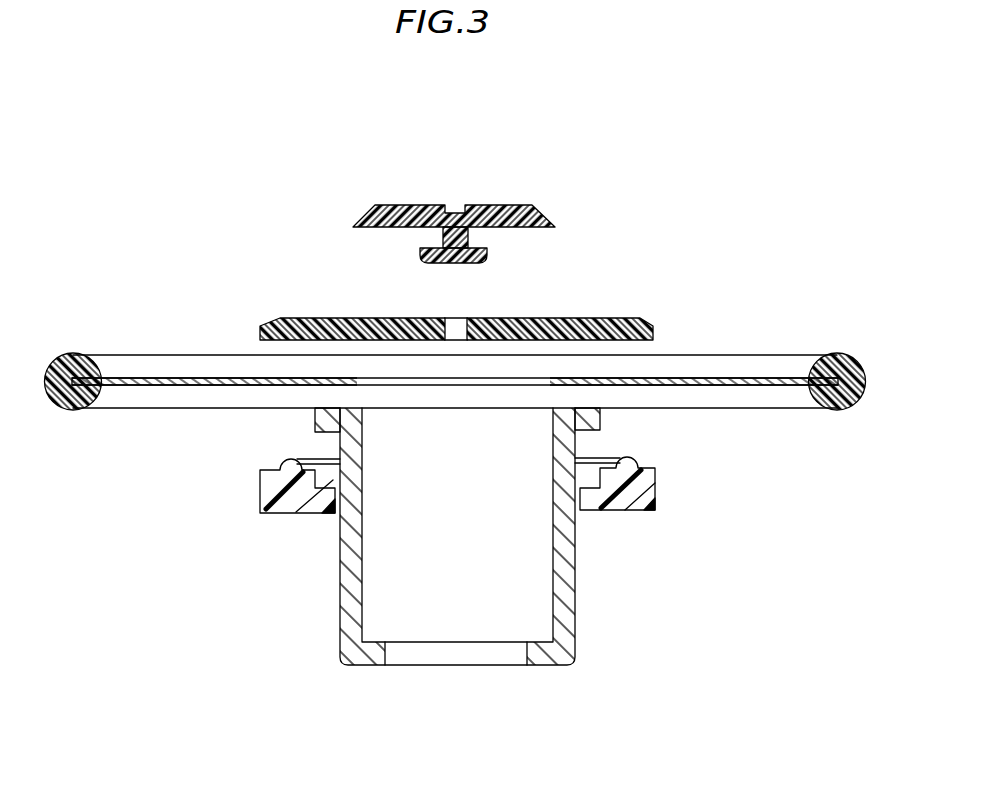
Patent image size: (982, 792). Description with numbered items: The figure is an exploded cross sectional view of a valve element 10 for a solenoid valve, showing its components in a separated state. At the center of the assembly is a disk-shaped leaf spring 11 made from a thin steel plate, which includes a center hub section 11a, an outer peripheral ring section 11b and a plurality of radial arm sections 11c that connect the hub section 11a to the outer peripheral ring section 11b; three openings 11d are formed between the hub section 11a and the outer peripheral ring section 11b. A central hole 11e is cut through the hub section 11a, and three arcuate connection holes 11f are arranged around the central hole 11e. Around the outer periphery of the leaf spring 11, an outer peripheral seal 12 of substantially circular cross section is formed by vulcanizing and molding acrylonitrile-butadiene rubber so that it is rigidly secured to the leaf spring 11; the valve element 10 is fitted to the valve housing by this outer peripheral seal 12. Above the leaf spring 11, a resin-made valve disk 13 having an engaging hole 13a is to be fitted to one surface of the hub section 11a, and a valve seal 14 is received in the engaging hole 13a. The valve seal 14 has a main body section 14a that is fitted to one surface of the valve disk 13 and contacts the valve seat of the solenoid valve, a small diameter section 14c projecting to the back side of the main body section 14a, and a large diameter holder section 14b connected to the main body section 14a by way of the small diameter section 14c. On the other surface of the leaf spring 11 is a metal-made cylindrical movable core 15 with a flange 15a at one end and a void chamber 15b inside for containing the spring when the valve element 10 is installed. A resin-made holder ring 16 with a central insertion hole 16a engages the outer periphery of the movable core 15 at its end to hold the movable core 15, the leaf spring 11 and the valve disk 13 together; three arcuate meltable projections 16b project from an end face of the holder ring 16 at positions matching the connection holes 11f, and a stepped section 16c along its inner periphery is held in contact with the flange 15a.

The valve element 10 is at (637, 617).
The leaf spring 11 is at (733, 360).
The hub section 11a is at (570, 384).
The outer peripheral ring section 11b is at (796, 358).
The radial arm sections 11c is at (145, 387).
The openings 11d is at (765, 410).
The central hole 11e is at (455, 384).
The connection holes 11f is at (283, 378).
The outer peripheral seal 12 is at (73, 360).
The valve disk 13 is at (568, 330).
The engaging hole 13a is at (455, 326).
The valve seal 14 is at (480, 205).
The main body section 14a is at (393, 202).
The large diameter holder section 14b is at (420, 256).
The small diameter section 14c is at (468, 240).
The movable core 15 is at (420, 575).
The flange 15a is at (316, 426).
The void chamber 15b is at (457, 624).
The holder ring 16 is at (455, 527).
The central insertion hole 16a is at (335, 522).
The meltable projections 16b is at (283, 465).
The stepped section 16c is at (594, 484).